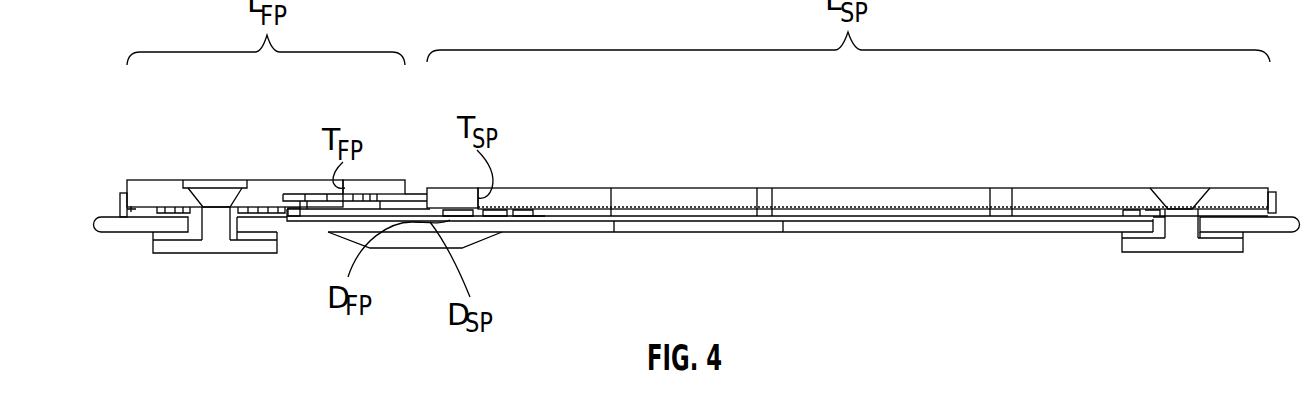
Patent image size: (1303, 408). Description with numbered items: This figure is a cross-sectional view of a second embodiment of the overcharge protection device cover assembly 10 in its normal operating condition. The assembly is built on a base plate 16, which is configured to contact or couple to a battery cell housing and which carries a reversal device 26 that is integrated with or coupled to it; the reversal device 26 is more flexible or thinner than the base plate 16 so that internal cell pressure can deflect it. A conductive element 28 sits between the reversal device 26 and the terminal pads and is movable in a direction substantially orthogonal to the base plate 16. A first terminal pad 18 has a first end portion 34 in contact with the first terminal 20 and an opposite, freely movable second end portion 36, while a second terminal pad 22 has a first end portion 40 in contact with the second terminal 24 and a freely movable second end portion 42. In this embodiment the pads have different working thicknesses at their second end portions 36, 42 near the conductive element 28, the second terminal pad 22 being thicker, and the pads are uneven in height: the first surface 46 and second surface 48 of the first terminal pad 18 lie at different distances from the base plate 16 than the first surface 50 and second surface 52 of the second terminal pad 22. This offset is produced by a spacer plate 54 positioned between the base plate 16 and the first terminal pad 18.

The overcharge protection device cover assembly 10 is at (106, 121).
The base plate 16 is at (100, 224).
The first terminal pad 18 is at (266, 174).
The first terminal 20 is at (180, 181).
The second terminal pad 22 is at (1059, 160).
The second terminal 24 is at (1178, 197).
The reversal device 26 is at (412, 236).
The conductive element 28 is at (465, 219).
The first end portion 34 is at (137, 177).
The second end portion 36 is at (389, 175).
The first end portion 40 is at (1234, 181).
The second end portion 42 is at (431, 180).
The first surface 46 is at (214, 200).
The second surface 48 is at (302, 214).
The first surface 50 is at (645, 187).
The second surface 52 is at (507, 219).
The spacer plate 54 is at (118, 198).